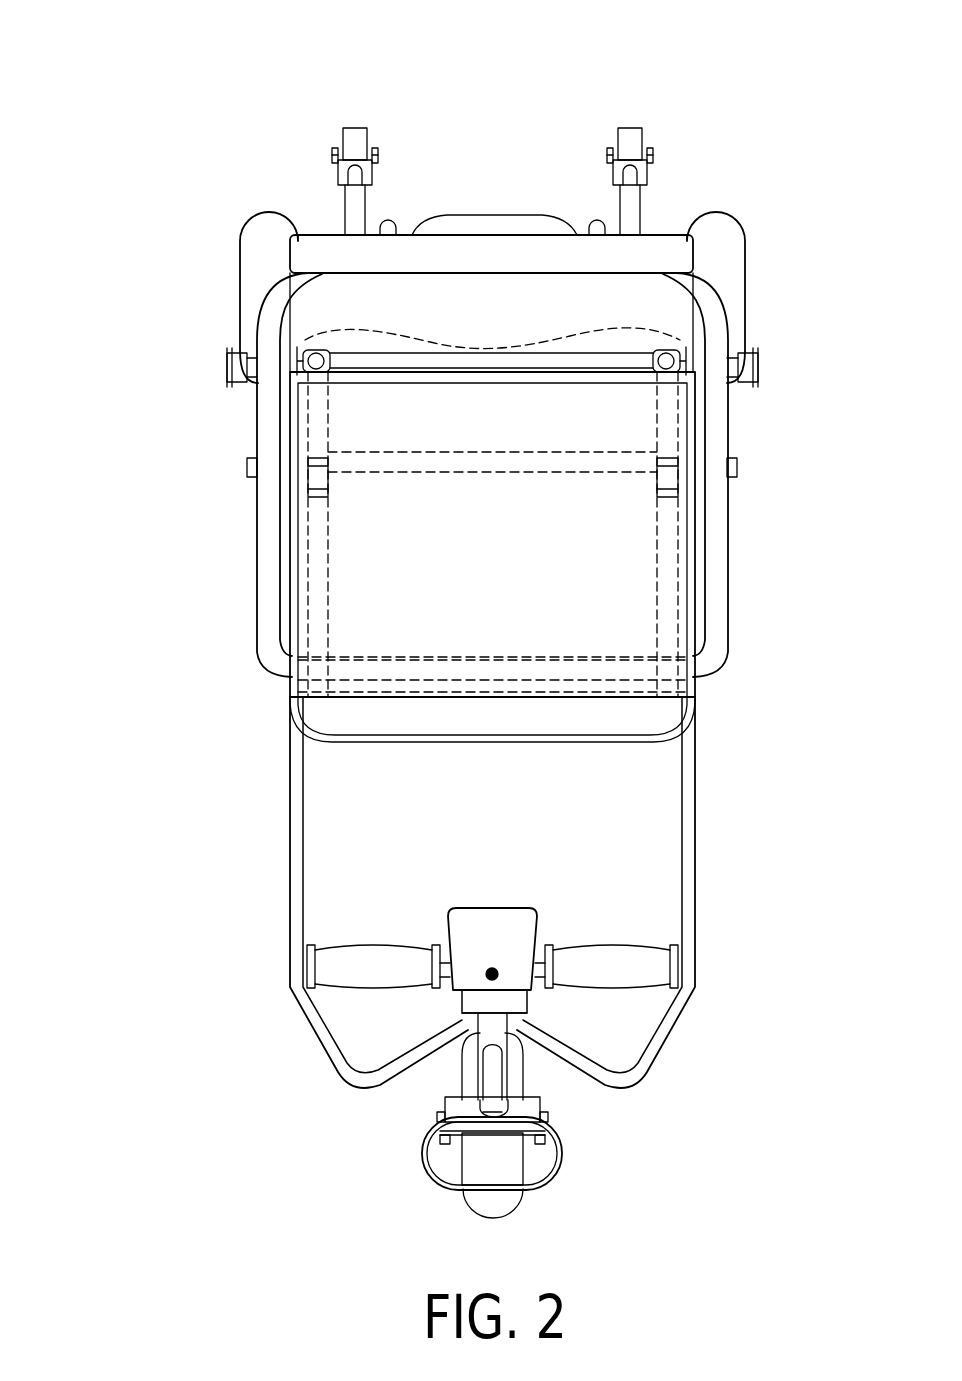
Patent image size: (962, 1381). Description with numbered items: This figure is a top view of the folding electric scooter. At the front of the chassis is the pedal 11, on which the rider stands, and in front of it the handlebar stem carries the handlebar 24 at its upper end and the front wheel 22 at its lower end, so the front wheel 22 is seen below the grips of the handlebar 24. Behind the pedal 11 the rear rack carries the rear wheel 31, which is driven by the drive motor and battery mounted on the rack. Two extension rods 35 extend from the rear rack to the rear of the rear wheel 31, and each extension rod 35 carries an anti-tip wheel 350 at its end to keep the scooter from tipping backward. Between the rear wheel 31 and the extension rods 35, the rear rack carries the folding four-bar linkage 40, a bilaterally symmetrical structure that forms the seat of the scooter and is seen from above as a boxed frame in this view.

The pedal 11 is at (335, 852).
The front wheel 22 is at (510, 1200).
The handlebar 24 is at (537, 987).
The rear wheel 31 is at (265, 238).
The extension rod 35 is at (358, 205).
The anti-tip wheel 350 is at (355, 138).
The folding four-bar linkage 40 is at (242, 428).